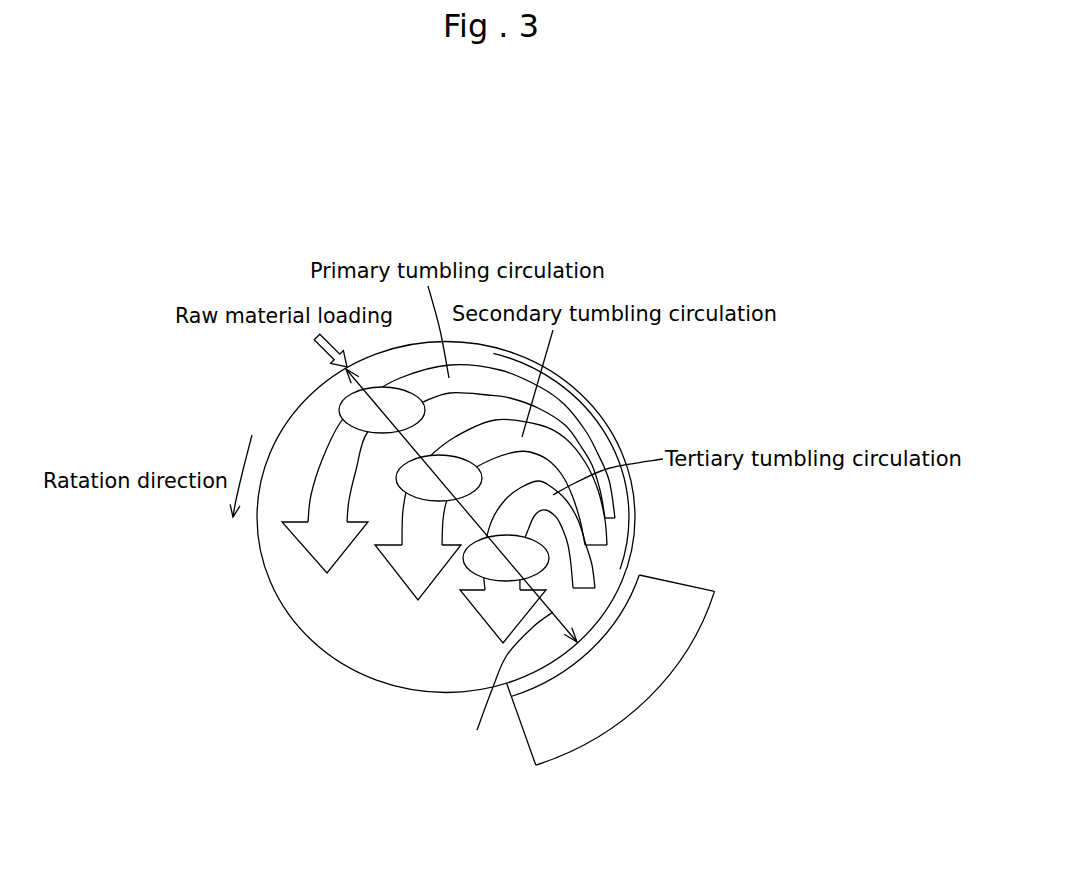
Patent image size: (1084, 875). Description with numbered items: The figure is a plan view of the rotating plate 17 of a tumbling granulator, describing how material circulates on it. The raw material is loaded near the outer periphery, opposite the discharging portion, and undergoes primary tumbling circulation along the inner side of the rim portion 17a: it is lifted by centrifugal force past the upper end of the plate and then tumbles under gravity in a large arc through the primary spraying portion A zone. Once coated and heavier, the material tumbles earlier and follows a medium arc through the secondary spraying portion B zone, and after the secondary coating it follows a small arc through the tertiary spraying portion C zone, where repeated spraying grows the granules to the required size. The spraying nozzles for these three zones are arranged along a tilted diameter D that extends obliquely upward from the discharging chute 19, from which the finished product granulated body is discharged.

The rotating plate 17 is at (595, 413).
The rim portion 17a is at (615, 437).
The discharging chute 19 is at (658, 657).
The primary spraying portion A zone A is at (382, 410).
The secondary spraying portion B zone B is at (439, 478).
The tertiary spraying portion C zone C is at (506, 558).
The tilted diameter D is at (511, 687).